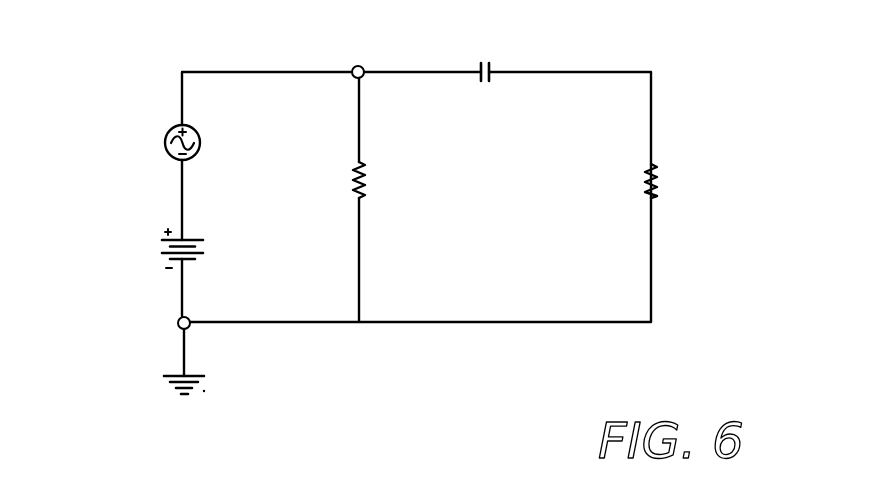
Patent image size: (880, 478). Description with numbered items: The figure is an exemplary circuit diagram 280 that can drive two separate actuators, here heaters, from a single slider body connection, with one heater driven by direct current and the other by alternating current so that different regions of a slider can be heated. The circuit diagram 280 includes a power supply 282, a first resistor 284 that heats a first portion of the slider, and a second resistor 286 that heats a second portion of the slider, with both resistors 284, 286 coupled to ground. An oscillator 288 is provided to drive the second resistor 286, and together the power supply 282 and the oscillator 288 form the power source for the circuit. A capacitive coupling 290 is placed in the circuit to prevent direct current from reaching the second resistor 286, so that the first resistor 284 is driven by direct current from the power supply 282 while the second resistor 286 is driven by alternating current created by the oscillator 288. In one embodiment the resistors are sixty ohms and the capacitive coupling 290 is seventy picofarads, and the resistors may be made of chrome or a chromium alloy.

The circuit diagram 280 is at (173, 62).
The power supply 282 is at (163, 250).
The first resistor 284 is at (372, 178).
The second resistor 286 is at (666, 177).
The oscillator 288 is at (165, 144).
The capacitive coupling 290 is at (500, 62).